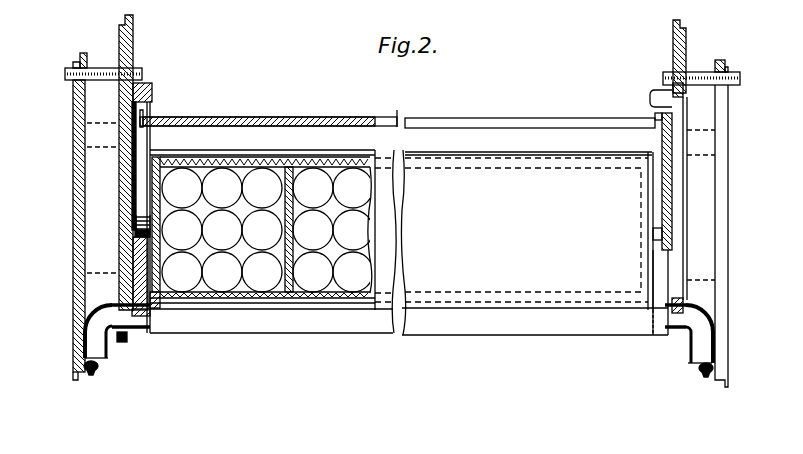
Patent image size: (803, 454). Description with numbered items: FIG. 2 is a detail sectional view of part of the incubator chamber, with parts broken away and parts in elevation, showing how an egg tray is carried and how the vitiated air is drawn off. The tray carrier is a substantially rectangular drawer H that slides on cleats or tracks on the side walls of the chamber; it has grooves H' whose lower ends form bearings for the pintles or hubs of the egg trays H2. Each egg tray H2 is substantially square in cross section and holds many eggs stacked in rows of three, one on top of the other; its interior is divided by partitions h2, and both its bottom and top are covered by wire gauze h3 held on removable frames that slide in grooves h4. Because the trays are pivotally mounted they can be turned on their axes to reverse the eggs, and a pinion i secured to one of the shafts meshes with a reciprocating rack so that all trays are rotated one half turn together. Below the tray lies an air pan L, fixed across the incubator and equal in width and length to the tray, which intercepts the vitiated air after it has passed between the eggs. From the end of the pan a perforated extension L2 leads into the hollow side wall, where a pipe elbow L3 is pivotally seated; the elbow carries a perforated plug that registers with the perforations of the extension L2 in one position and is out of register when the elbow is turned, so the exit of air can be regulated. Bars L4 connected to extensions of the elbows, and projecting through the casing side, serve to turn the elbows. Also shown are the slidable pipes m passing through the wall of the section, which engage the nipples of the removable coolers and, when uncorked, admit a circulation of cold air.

The slidable pipe m is at (133, 74).
The groove H' is at (418, 166).
The pinion i is at (118, 212).
The drawer H is at (393, 214).
The egg tray H2 is at (401, 230).
The groove h4 is at (181, 157).
The wire gauze h3 is at (222, 162).
The partition h2 is at (288, 284).
The air pan L is at (358, 322).
The perforated extension L2 is at (139, 352).
The pipe elbow L3 is at (733, 320).
The bar L4 is at (703, 372).